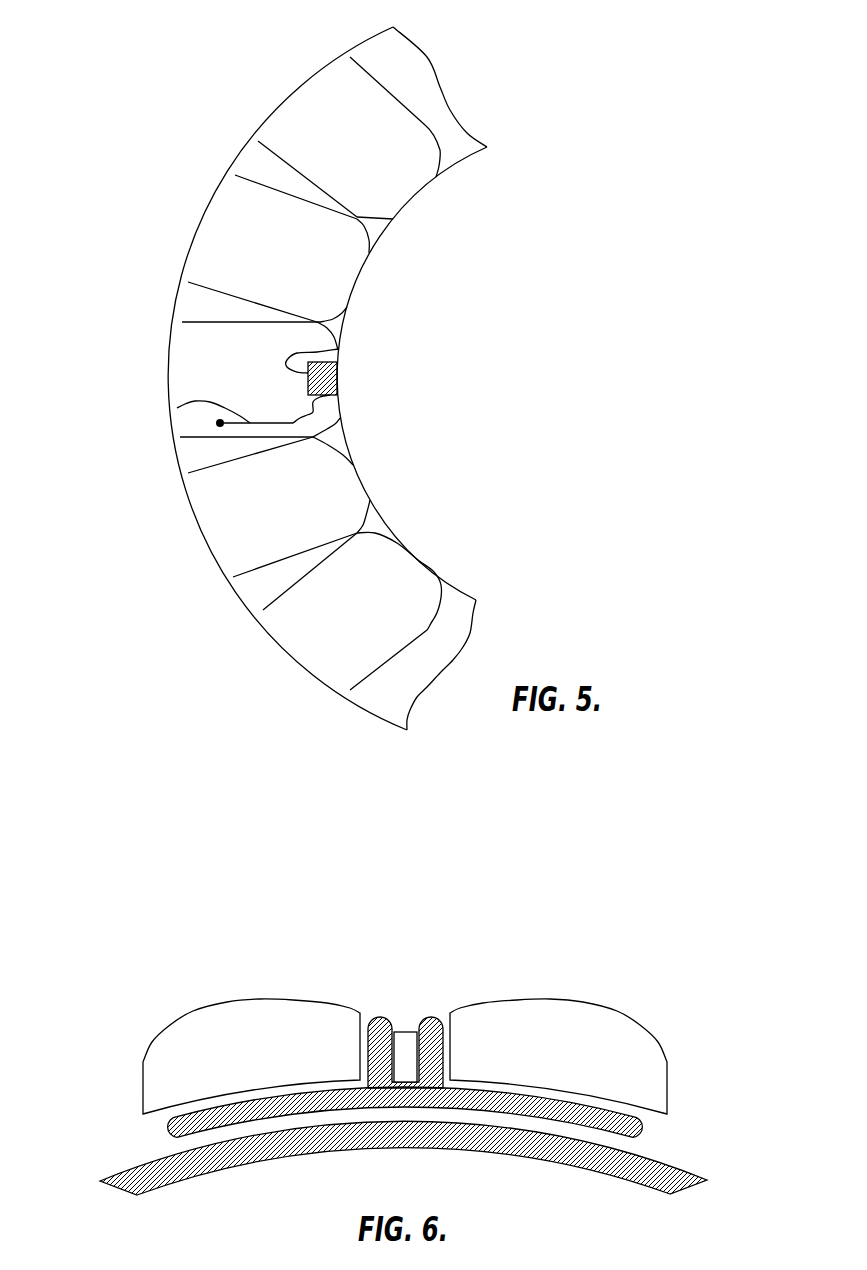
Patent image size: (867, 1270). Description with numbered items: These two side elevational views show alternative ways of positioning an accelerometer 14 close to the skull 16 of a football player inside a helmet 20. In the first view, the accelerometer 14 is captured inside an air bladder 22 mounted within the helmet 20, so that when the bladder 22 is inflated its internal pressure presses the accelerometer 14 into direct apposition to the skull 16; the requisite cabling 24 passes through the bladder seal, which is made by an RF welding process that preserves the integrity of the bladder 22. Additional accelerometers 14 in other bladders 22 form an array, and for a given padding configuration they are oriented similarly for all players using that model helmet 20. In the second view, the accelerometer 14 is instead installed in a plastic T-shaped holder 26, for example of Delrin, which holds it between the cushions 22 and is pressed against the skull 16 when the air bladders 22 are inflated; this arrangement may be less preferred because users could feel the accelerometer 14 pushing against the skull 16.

In FIG. 5, the helmet 20 is at (287, 91).
In FIG. 5, the skull 16 is at (373, 230).
In FIG. 6, the skull 16 is at (323, 1145).
In FIG. 5, the accelerometer 14 is at (338, 348).
In FIG. 6, the accelerometer 14 is at (408, 1040).
In FIG. 5, the air bladder 22 is at (210, 393).
In FIG. 6, the air bladder 22 is at (197, 1028).
In FIG. 5, the cabling 24 is at (177, 409).
In FIG. 6, the T-shaped holder 26 is at (645, 1128).